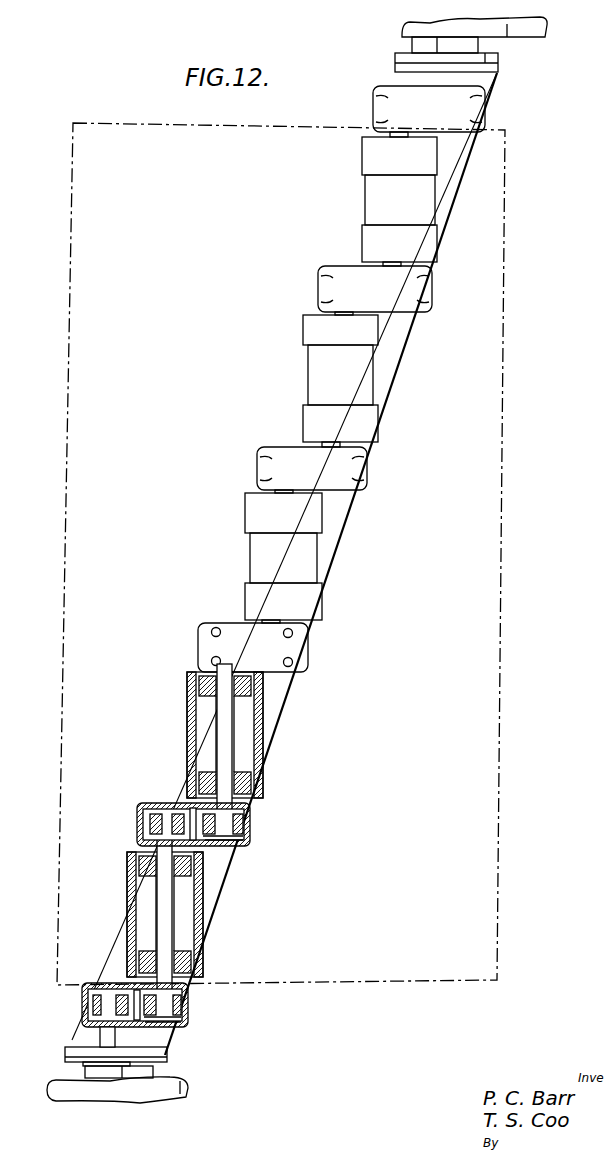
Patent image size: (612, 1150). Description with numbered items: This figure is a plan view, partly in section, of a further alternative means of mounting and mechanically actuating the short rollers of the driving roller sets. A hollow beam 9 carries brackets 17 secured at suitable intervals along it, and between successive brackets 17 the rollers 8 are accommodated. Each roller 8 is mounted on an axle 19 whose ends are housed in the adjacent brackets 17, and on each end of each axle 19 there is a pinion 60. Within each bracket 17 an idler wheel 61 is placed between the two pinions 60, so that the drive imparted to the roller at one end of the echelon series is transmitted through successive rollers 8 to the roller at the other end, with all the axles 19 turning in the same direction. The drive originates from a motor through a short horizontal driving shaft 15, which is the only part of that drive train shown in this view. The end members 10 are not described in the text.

The roller 8 is at (382, 156).
The hollow beam 9 is at (110, 937).
The foot 10 is at (514, 30).
The short horizontal driving shaft 15 is at (66, 1040).
The bracket 17 is at (403, 105).
The axle 19 is at (217, 735).
The pinion 60 is at (143, 828).
The idler wheel 61 is at (236, 844).